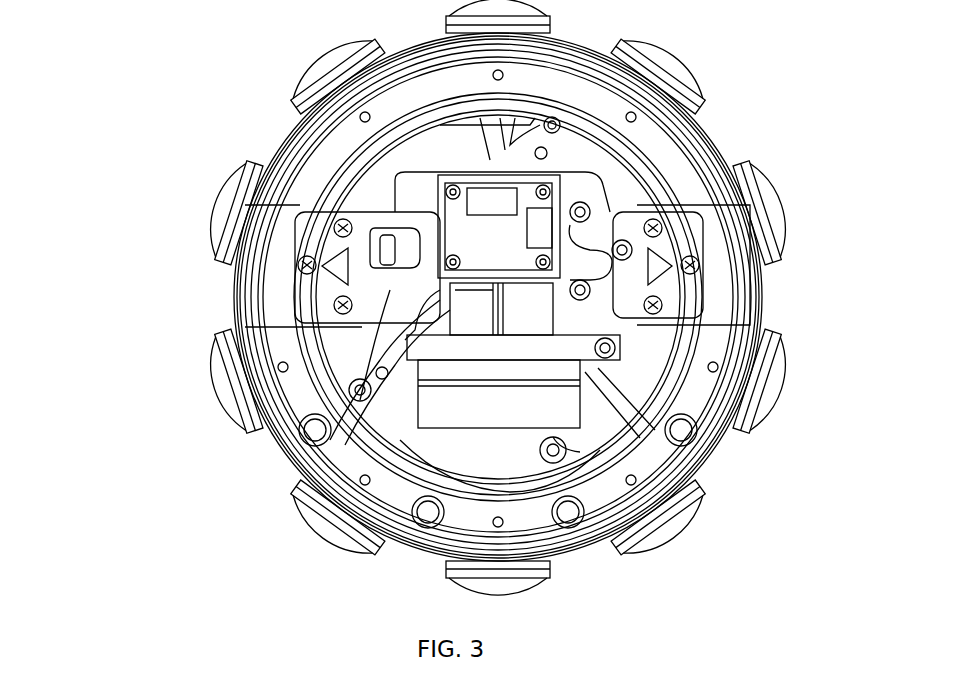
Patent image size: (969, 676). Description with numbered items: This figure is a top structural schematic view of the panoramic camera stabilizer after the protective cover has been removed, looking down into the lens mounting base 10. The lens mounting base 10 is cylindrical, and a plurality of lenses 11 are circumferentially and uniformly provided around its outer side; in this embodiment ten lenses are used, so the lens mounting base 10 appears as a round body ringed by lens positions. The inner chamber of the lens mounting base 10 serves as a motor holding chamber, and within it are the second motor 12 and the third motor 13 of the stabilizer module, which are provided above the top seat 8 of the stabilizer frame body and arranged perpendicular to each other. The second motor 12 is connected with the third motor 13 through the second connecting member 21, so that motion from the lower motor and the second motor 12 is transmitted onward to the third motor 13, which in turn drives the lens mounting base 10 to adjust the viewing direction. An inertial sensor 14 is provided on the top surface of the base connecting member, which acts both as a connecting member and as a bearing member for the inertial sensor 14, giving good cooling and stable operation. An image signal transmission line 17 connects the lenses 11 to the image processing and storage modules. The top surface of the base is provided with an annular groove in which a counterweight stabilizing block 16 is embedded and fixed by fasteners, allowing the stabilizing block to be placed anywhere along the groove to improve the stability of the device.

The top seat 8 is at (542, 138).
The lens mounting base 10 is at (657, 470).
The lens 11 is at (667, 65).
The second motor 12 is at (488, 403).
The third motor 13 is at (495, 303).
The inertial sensor 14 is at (495, 205).
The counterweight stabilizing block 16 is at (323, 143).
The image signal transmission line 17 is at (407, 436).
The second connecting member 21 is at (524, 348).